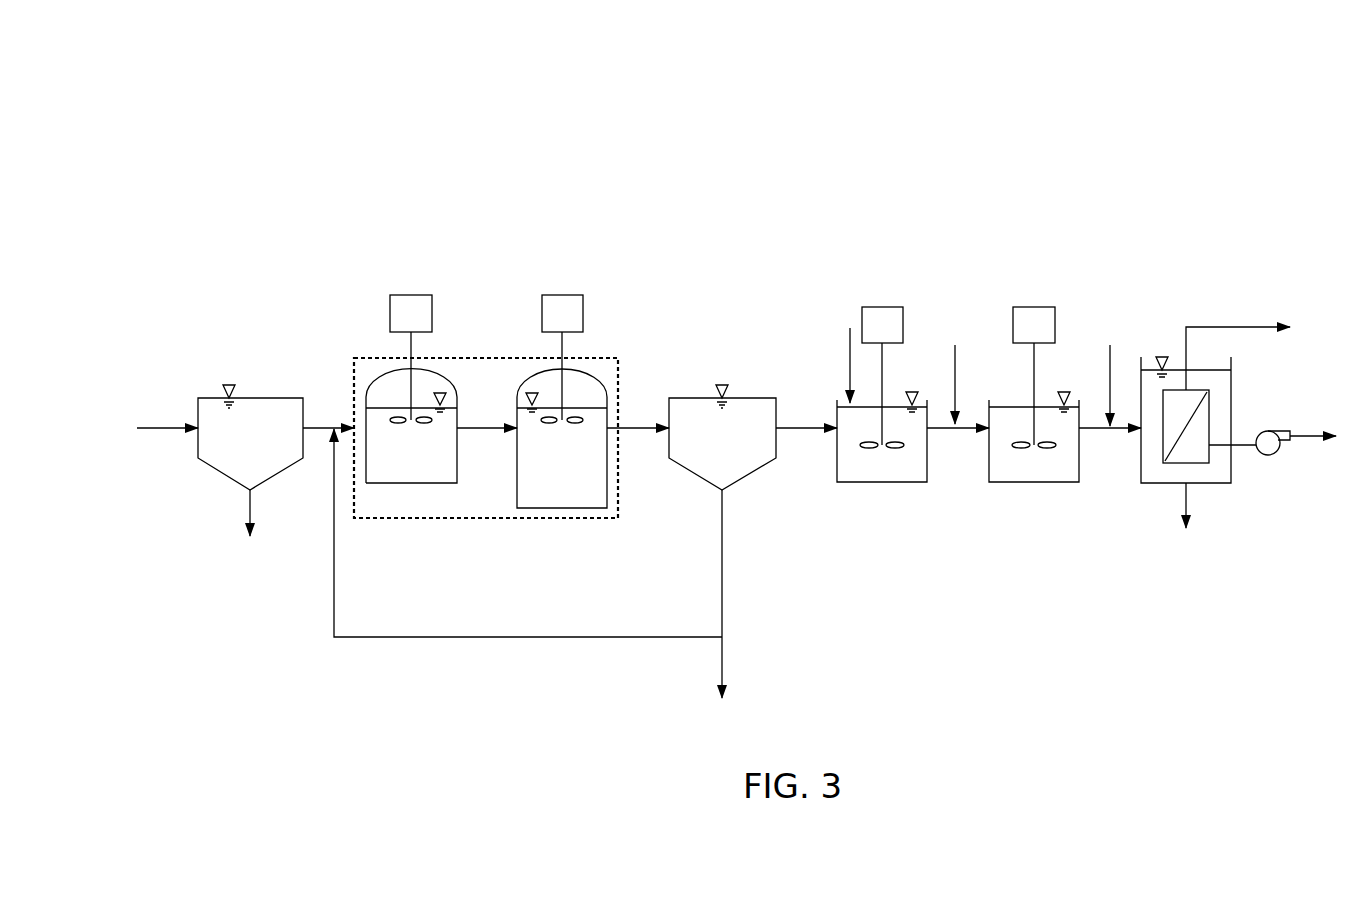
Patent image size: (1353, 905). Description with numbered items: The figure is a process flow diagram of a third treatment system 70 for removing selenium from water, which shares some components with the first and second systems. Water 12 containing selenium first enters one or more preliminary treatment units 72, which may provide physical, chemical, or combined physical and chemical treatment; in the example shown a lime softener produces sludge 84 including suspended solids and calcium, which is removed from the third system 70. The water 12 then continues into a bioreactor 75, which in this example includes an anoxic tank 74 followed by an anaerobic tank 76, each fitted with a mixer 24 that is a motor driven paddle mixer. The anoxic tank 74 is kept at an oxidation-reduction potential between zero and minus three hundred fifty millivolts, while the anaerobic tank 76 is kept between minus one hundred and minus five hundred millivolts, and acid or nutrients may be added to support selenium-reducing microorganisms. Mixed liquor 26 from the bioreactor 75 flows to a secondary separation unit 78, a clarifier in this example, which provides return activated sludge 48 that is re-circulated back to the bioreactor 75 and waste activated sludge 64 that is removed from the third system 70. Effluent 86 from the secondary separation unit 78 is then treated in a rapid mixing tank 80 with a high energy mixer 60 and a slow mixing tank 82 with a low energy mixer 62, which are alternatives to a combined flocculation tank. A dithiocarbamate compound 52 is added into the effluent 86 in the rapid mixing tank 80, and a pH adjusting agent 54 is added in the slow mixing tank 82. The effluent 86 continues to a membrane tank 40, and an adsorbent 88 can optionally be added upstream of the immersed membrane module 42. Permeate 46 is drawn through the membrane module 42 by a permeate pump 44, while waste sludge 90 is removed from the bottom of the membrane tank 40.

The third treatment system 70 is at (1120, 145).
The water 12 is at (166, 425).
The preliminary treatment unit 72 is at (274, 398).
The sludge 84 is at (254, 497).
The return activated sludge 48 is at (570, 640).
The bioreactor 75 is at (372, 520).
The anoxic tank 74 is at (410, 484).
The mixer 24 is at (410, 295).
The anaerobic tank 76 is at (562, 509).
The mixed liquor 26 is at (637, 420).
The secondary separation unit 78 is at (762, 398).
The waste activated sludge 64 is at (722, 650).
The effluent 86 is at (806, 420).
The dithiocarbamate compound 52 is at (850, 344).
The rapid mixing tank 80 is at (882, 483).
The high energy mixer 60 is at (882, 306).
The pH adjusting agent 54 is at (955, 365).
The slow mixing tank 82 is at (1034, 483).
The low energy mixer 62 is at (1034, 306).
The adsorbent 88 is at (1110, 365).
The membrane tank 40 is at (1141, 460).
The membrane module 42 is at (1210, 455).
The permeate pump 44 is at (1266, 428).
The permeate 46 is at (1310, 430).
The waste sludge 90 is at (1190, 500).